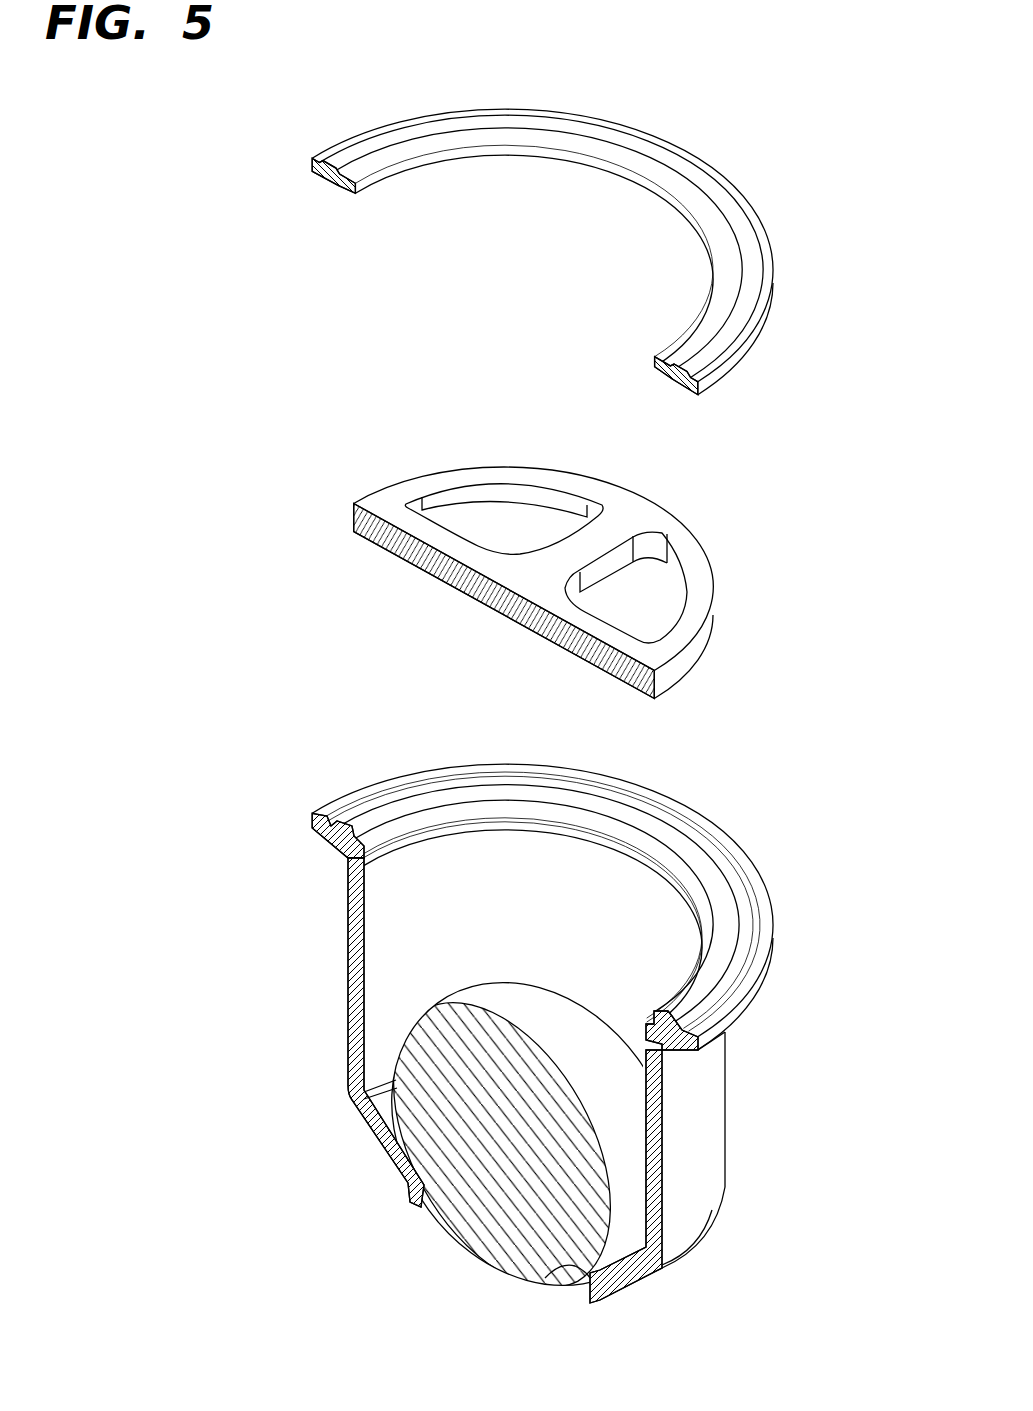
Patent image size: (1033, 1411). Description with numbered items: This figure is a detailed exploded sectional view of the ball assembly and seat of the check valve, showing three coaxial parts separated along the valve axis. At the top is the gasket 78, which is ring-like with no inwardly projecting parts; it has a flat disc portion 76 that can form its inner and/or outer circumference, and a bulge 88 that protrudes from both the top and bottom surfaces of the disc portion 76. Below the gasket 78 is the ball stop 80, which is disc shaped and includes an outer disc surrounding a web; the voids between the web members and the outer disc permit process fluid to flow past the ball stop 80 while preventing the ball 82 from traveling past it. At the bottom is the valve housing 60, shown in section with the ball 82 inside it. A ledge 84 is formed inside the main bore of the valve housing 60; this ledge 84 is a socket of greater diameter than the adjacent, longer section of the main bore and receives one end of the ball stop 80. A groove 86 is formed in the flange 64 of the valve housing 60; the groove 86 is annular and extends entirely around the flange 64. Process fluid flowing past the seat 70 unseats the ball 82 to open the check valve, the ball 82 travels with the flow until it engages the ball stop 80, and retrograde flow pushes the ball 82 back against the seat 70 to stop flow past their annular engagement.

The valve housing 60 is at (727, 1111).
The flange 64 is at (775, 910).
The seat 70 is at (545, 1278).
The disc portion 76 is at (701, 309).
The gasket 78 is at (775, 263).
The ball stop 80 is at (715, 596).
The ball 82 is at (528, 1158).
The ledge 84 is at (368, 849).
The groove 86 is at (333, 822).
The bulge 88 is at (677, 383).